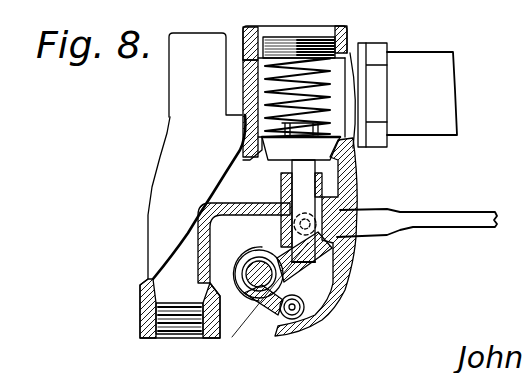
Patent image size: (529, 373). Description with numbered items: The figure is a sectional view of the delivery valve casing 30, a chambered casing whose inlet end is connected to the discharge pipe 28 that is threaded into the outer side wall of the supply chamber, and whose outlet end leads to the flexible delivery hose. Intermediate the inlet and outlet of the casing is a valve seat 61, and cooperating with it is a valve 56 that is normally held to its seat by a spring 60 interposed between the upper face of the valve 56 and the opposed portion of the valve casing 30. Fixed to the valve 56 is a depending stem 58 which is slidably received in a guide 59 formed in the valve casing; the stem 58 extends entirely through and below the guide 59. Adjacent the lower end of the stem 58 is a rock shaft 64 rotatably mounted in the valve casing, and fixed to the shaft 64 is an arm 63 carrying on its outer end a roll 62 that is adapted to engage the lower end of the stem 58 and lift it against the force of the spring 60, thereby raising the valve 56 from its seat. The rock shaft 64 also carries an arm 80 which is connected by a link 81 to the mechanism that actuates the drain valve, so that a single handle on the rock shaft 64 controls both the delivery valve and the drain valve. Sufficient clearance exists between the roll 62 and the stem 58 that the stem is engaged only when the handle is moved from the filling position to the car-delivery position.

The discharge pipe 28 is at (407, 95).
The valve casing 30 is at (167, 201).
The valve 56 is at (340, 150).
The stem 58 is at (300, 187).
The guide 59 is at (282, 180).
The spring 60 is at (318, 67).
The valve seat 61 is at (240, 143).
The roll 62 is at (310, 316).
The arm 63 is at (270, 312).
The rock shaft 64 is at (248, 303).
The arm 80 is at (298, 272).
The link 81 is at (409, 220).